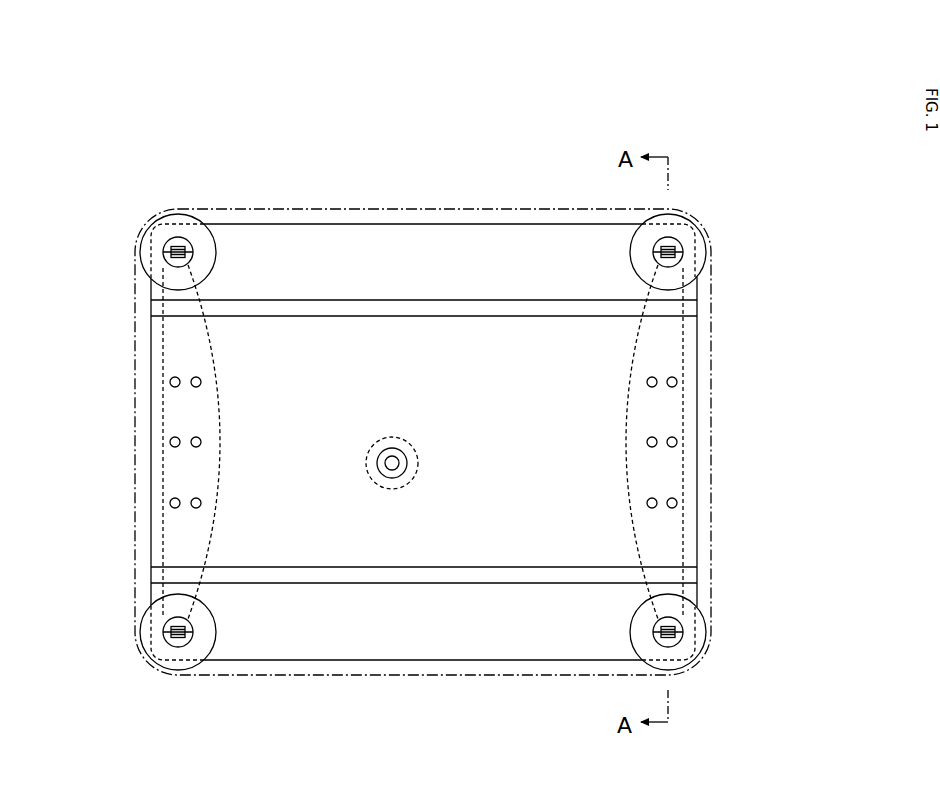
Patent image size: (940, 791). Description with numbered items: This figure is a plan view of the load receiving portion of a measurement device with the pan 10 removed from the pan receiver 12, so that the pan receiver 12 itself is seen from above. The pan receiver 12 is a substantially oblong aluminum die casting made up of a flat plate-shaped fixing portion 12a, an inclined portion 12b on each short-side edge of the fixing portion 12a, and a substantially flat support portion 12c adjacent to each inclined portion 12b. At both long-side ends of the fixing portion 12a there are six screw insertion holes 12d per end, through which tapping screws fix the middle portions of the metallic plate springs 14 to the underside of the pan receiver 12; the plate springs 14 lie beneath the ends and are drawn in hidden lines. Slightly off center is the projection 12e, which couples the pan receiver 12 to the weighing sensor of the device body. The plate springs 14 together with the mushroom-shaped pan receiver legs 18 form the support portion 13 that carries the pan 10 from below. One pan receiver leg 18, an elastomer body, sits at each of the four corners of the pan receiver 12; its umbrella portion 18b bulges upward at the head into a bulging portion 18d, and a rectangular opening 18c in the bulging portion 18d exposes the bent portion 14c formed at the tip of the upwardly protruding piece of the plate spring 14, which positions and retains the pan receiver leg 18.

The pan 10 is at (323, 207).
The pan receiver 12 is at (268, 221).
The fixing portion 12a is at (368, 328).
The inclined portion 12b is at (450, 307).
The support portion 12c is at (547, 238).
The screw insertion holes 12d is at (172, 382).
The projection 12e is at (392, 490).
The support portion 13 is at (163, 458).
The plate spring 14 is at (683, 475).
The bent portion 14c is at (168, 264).
The pan receiver leg 18 is at (136, 262).
The umbrella portion 18b is at (146, 232).
The opening 18c is at (170, 240).
The bulging portion 18d is at (176, 241).